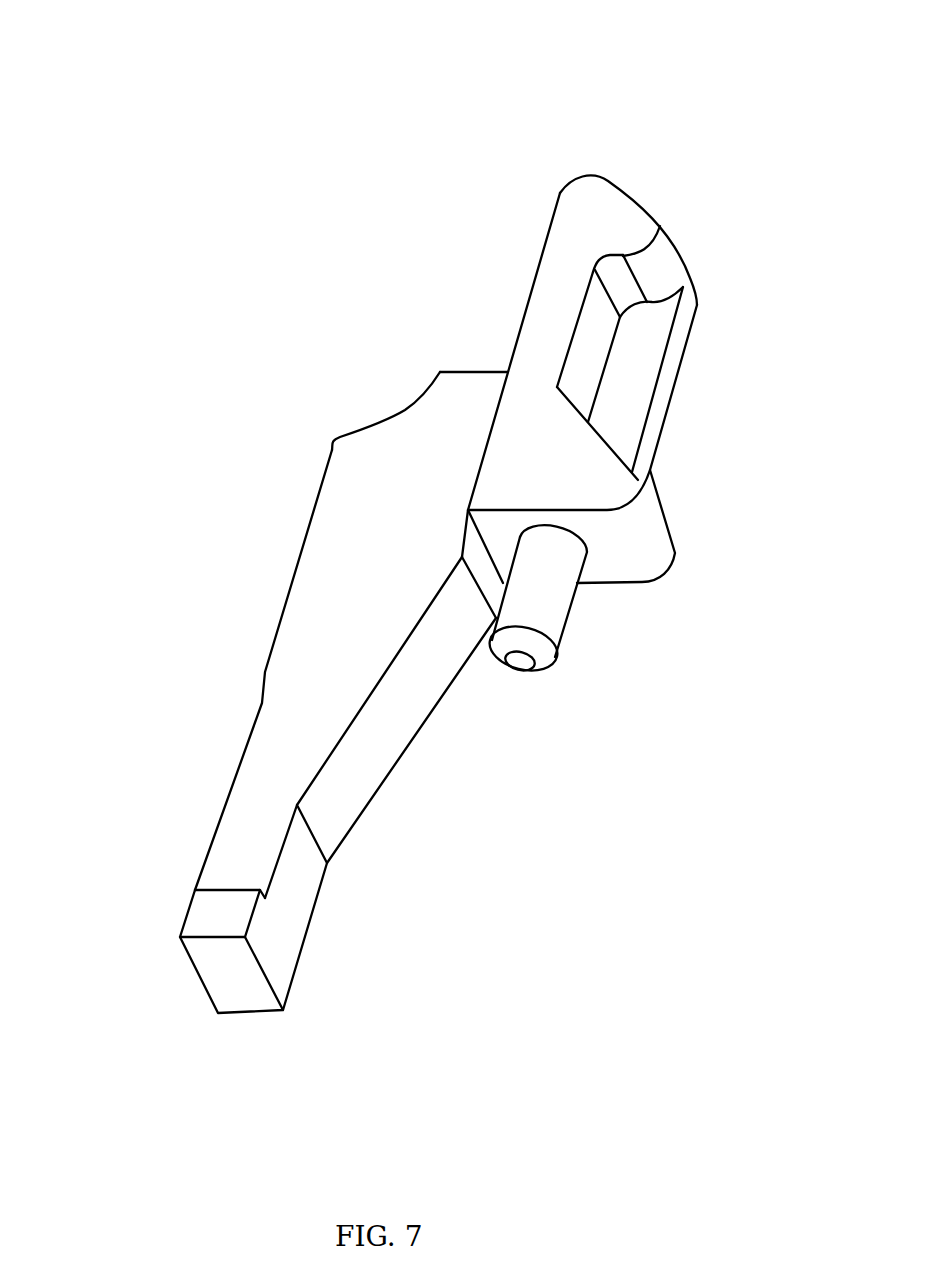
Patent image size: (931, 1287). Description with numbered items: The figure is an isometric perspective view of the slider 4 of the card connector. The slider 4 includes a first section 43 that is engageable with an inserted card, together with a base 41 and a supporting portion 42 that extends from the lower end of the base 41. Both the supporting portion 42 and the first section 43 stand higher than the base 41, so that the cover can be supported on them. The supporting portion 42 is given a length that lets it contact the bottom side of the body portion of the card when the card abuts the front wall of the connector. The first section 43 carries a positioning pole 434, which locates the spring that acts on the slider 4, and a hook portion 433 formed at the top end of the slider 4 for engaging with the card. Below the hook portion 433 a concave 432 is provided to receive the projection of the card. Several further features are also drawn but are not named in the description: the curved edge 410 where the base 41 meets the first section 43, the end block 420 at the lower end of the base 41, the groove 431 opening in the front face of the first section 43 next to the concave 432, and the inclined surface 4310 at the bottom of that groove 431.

The slider 4 is at (425, 512).
The base 41 is at (340, 558).
The curved edge portion 410 is at (402, 398).
The supporting portion 42 is at (300, 880).
The end block 420 is at (222, 918).
The first section 43 is at (547, 320).
The groove 431 is at (555, 457).
The concave 432 is at (633, 353).
The hook portion 433 is at (650, 233).
The bottom surface of groove 4310 is at (622, 488).
The positioning pole 434 is at (542, 605).